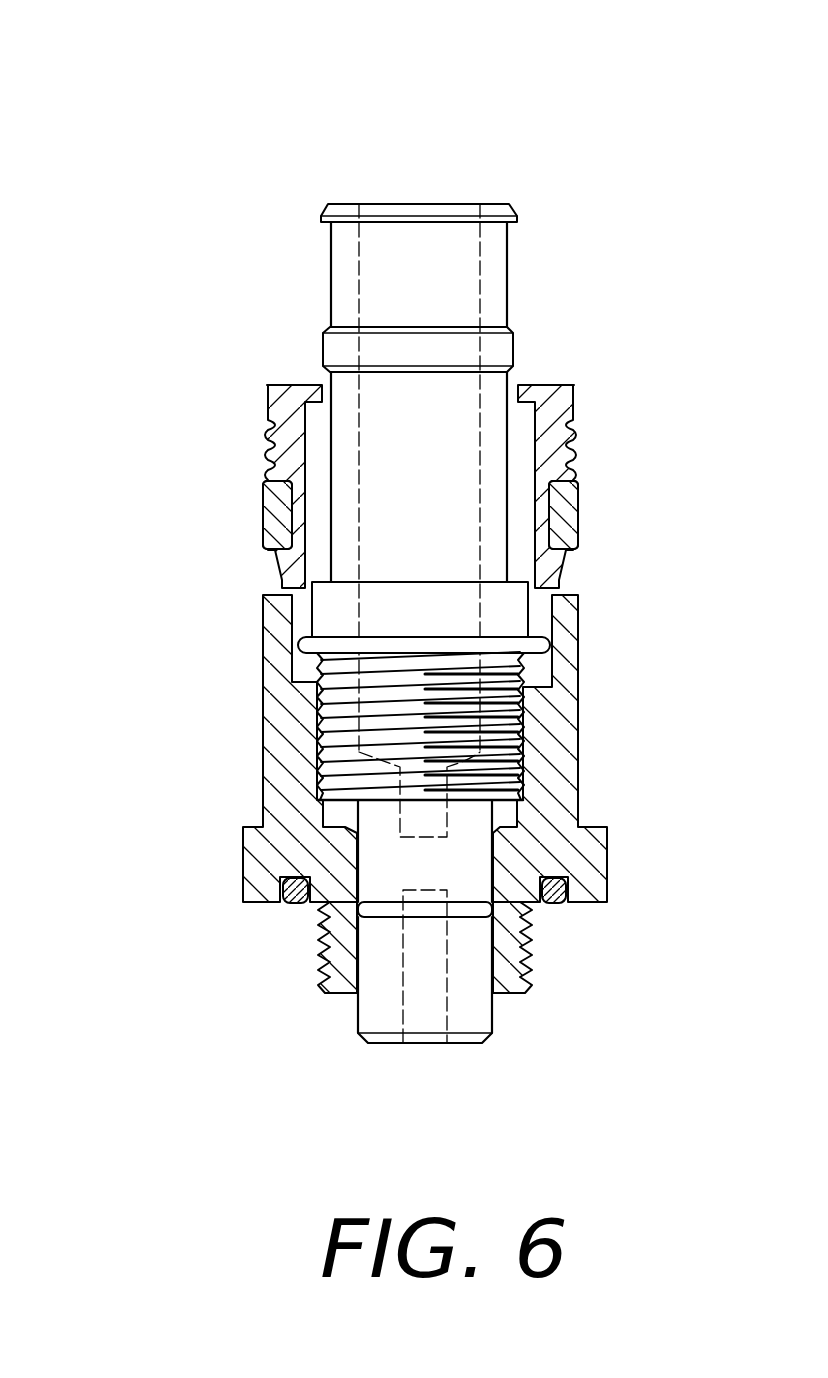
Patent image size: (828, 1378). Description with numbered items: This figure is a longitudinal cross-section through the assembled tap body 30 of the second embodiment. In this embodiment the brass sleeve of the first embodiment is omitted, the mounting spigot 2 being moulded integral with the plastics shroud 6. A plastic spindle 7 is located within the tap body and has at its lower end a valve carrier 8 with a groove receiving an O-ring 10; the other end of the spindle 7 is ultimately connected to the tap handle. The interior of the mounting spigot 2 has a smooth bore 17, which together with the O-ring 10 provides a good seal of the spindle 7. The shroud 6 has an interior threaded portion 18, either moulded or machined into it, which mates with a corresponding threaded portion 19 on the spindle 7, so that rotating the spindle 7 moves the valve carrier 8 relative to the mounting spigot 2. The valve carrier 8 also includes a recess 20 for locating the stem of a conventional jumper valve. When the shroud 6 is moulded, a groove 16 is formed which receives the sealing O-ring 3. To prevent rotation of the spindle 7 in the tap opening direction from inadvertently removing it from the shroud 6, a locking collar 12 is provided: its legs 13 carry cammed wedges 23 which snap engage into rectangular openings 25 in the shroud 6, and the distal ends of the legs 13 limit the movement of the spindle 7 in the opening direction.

The tap body 30 is at (148, 226).
The plastic spindle 7 is at (442, 252).
The locking collar 12 is at (553, 400).
The cammed wedges 23 is at (270, 557).
The legs 13 is at (537, 503).
The rectangular openings 25 is at (265, 580).
The plastic shroud 6 is at (580, 733).
The threaded portion 19 is at (330, 720).
The interior threaded portion 18 is at (518, 815).
The groove 16 is at (288, 877).
The sealing O-ring 3 is at (557, 902).
The mounting spigot 2 is at (320, 952).
The smooth bore 17 is at (530, 953).
The O-ring 10 is at (377, 907).
The valve carrier 8 is at (473, 1012).
The recess 20 is at (425, 1018).